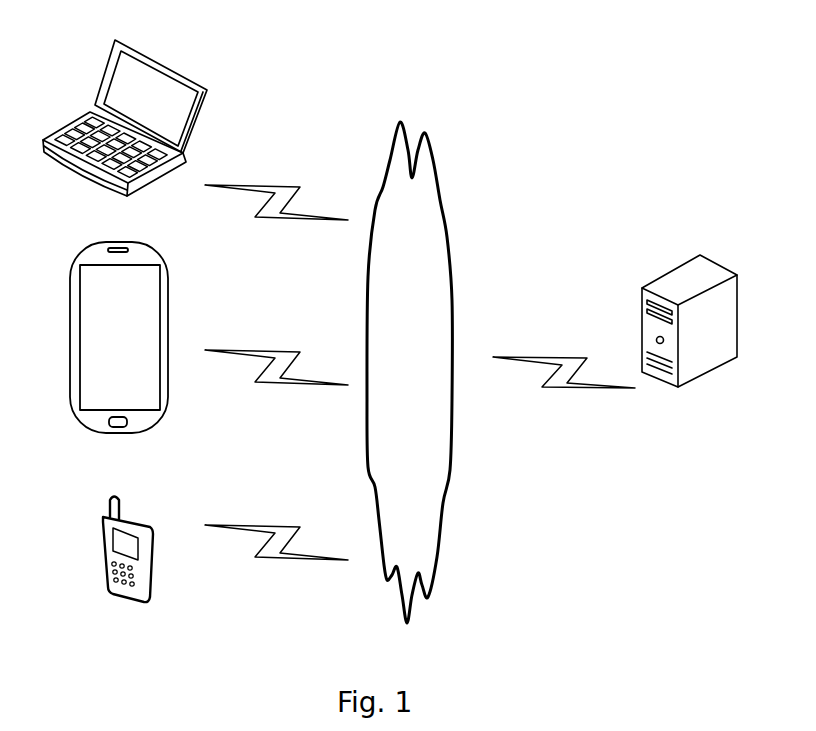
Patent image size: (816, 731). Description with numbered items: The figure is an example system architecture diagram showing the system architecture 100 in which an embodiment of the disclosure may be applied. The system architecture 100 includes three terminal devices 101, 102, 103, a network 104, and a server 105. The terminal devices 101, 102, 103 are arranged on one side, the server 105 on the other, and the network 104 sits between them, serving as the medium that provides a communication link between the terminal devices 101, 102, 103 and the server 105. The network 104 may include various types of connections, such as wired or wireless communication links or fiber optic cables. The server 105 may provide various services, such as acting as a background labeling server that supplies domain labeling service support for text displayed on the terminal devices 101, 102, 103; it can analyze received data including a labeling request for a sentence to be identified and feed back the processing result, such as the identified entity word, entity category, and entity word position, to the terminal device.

The system architecture 100 is at (663, 30).
The terminal device 101 is at (128, 569).
The terminal device 102 is at (119, 365).
The terminal device 103 is at (125, 136).
The network 104 is at (409, 372).
The server 105 is at (689, 354).